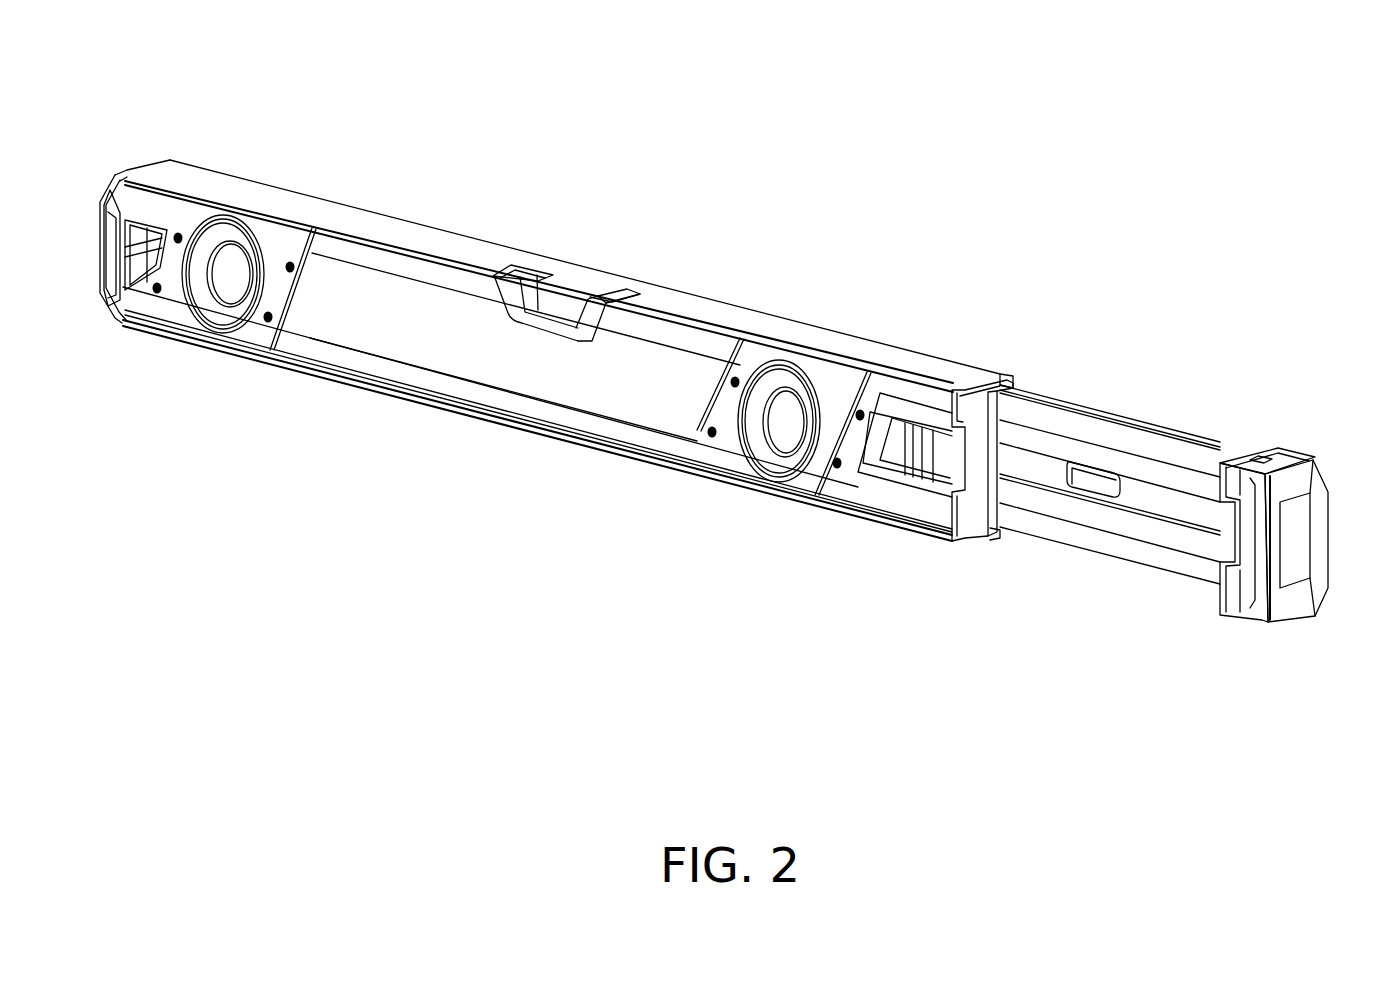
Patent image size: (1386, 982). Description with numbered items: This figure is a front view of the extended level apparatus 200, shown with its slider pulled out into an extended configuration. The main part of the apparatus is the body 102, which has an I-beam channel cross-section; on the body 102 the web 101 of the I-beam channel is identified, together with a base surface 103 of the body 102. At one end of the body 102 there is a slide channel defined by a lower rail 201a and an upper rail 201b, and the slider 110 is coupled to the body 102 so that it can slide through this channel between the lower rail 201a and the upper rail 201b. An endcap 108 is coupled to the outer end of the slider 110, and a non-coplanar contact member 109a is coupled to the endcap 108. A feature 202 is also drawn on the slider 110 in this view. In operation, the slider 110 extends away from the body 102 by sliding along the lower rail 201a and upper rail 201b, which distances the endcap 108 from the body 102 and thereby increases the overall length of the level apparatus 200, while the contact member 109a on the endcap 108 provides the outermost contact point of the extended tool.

The extended level apparatus 200 is at (949, 77).
The web 101 is at (403, 347).
The body 102 is at (953, 540).
The base surface 103 is at (392, 232).
The endcap 108 is at (1300, 480).
The non-coplanar contact member 109a is at (1258, 456).
The slider 110 is at (1086, 425).
The lower rail 201a is at (990, 537).
The upper rail 201b is at (1010, 378).
The slot 202 is at (1095, 480).